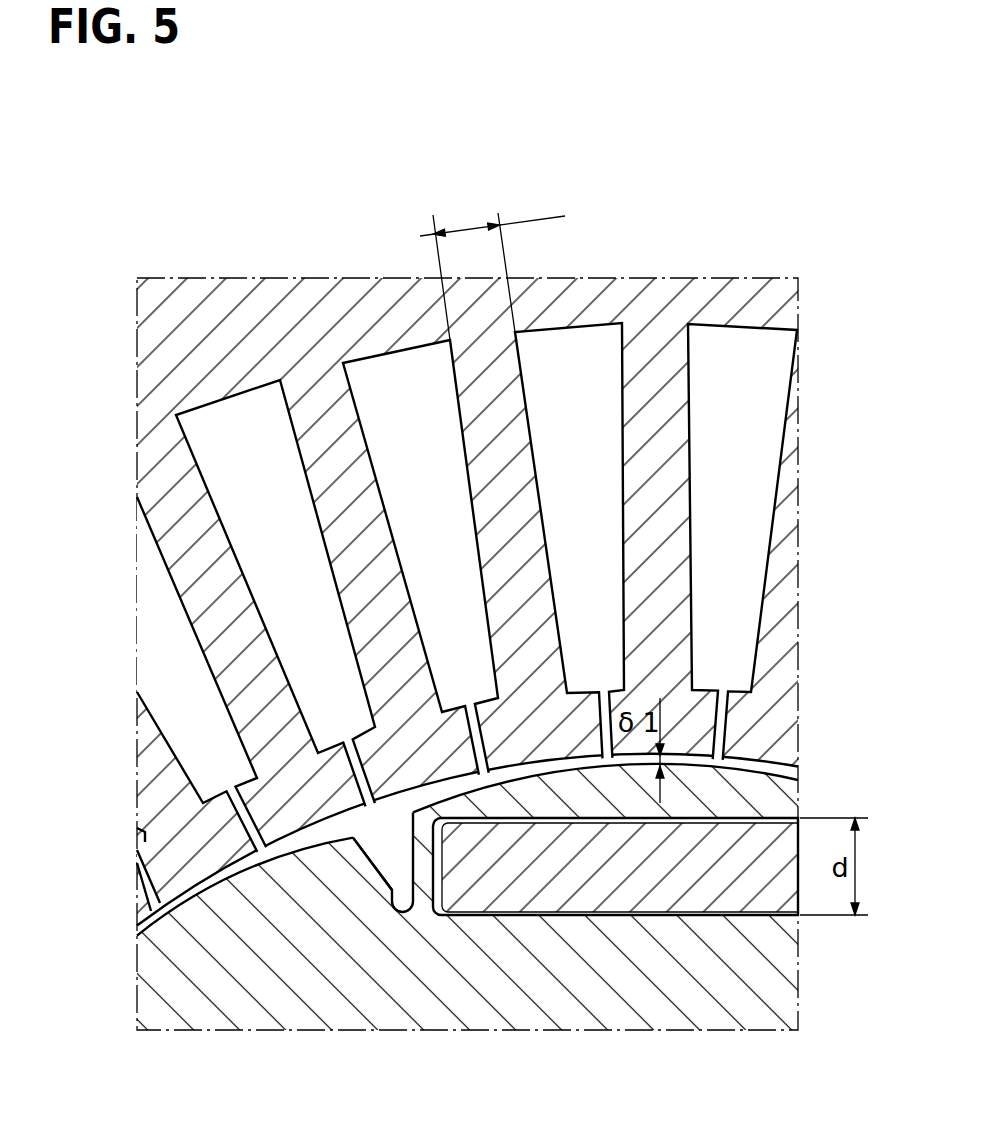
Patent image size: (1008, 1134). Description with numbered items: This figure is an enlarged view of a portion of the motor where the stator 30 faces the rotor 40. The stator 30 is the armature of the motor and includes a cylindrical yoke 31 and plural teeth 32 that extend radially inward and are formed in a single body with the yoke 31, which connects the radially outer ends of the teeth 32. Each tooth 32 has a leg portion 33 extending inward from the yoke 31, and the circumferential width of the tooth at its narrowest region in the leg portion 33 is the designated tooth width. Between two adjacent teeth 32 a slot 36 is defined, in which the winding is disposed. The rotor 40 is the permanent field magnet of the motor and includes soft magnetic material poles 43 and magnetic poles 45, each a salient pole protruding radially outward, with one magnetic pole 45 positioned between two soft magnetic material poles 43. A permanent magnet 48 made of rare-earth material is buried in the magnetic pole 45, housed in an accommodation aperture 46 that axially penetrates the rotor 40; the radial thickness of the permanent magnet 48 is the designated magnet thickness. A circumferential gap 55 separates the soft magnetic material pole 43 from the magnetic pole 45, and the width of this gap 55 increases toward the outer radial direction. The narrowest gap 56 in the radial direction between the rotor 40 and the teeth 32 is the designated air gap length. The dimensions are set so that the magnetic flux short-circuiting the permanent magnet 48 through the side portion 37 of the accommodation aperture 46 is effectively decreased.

The stator 30 is at (786, 270).
The yoke 31 is at (162, 327).
The teeth 32 is at (522, 514).
The leg portion 33 is at (510, 375).
The slot 36 is at (395, 383).
The side portion 37 is at (427, 885).
The rotor 40 is at (802, 1005).
The soft magnetic material pole 43 is at (220, 897).
The magnetic pole 45 is at (680, 795).
The accommodation aperture 46 is at (435, 853).
The permanent magnet 48 is at (674, 897).
The gap 55 is at (387, 848).
The narrowest gap 56 is at (142, 886).